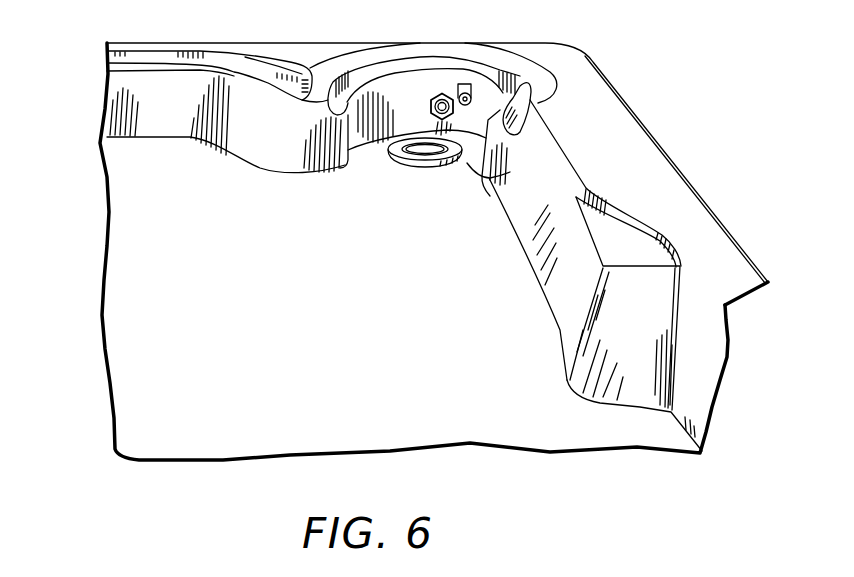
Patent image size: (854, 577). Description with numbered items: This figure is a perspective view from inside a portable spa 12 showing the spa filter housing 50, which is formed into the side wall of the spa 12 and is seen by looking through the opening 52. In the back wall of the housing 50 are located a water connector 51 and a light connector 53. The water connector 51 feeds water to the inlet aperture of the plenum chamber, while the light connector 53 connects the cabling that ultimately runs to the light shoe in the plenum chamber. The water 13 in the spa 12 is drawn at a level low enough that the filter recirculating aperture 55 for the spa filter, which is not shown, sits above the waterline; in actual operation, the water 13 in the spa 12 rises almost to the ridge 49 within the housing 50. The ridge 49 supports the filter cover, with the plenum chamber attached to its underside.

The spa 12 is at (630, 95).
The water 13 is at (147, 296).
The ridge 49 is at (418, 72).
The filter housing 50 is at (517, 74).
The water connector 51 is at (445, 96).
The opening 52 is at (472, 175).
The light connector 53 is at (467, 87).
The filter recirculating aperture 55 is at (402, 138).